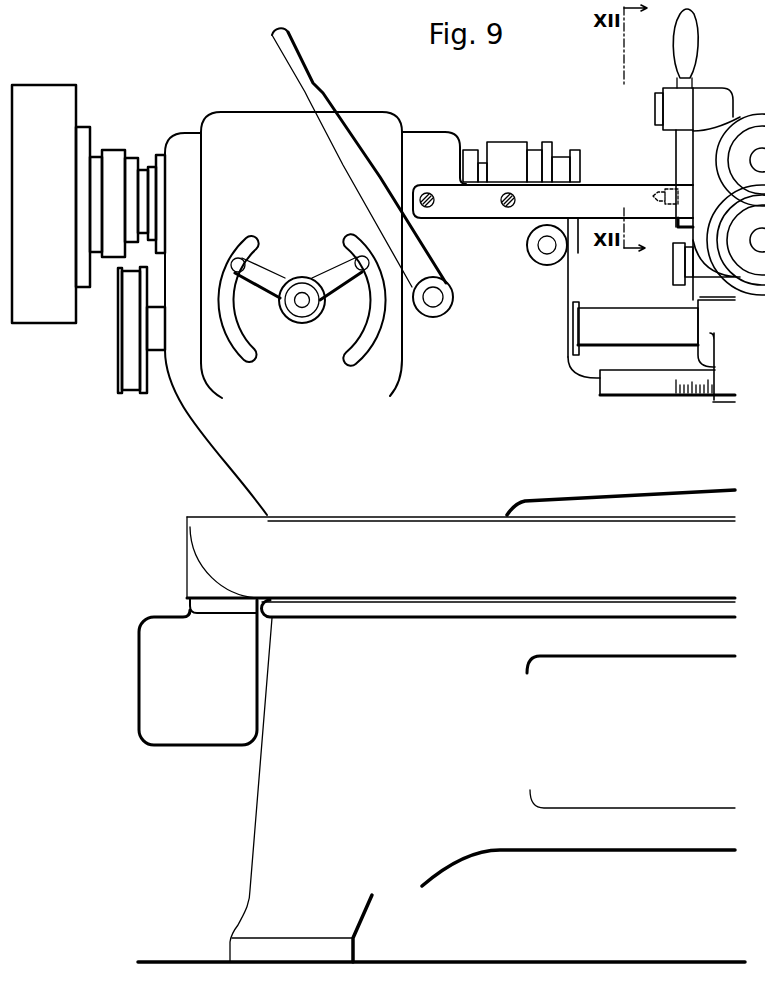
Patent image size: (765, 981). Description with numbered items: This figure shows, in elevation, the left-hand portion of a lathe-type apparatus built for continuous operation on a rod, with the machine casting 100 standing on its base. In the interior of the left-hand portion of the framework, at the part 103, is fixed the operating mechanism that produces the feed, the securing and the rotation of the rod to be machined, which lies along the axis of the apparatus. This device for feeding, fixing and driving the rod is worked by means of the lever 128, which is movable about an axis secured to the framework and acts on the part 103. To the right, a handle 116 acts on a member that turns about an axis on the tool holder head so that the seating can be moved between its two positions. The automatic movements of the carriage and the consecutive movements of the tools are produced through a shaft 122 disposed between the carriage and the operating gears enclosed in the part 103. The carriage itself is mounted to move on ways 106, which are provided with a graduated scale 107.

The headstock housing 100 is at (240, 428).
The part of the framework 103 is at (247, 120).
The lever 128 is at (318, 100).
The handle 116 is at (682, 43).
The shaft 122 is at (640, 325).
The ways 106 is at (635, 388).
The graduated scale 107 is at (703, 395).